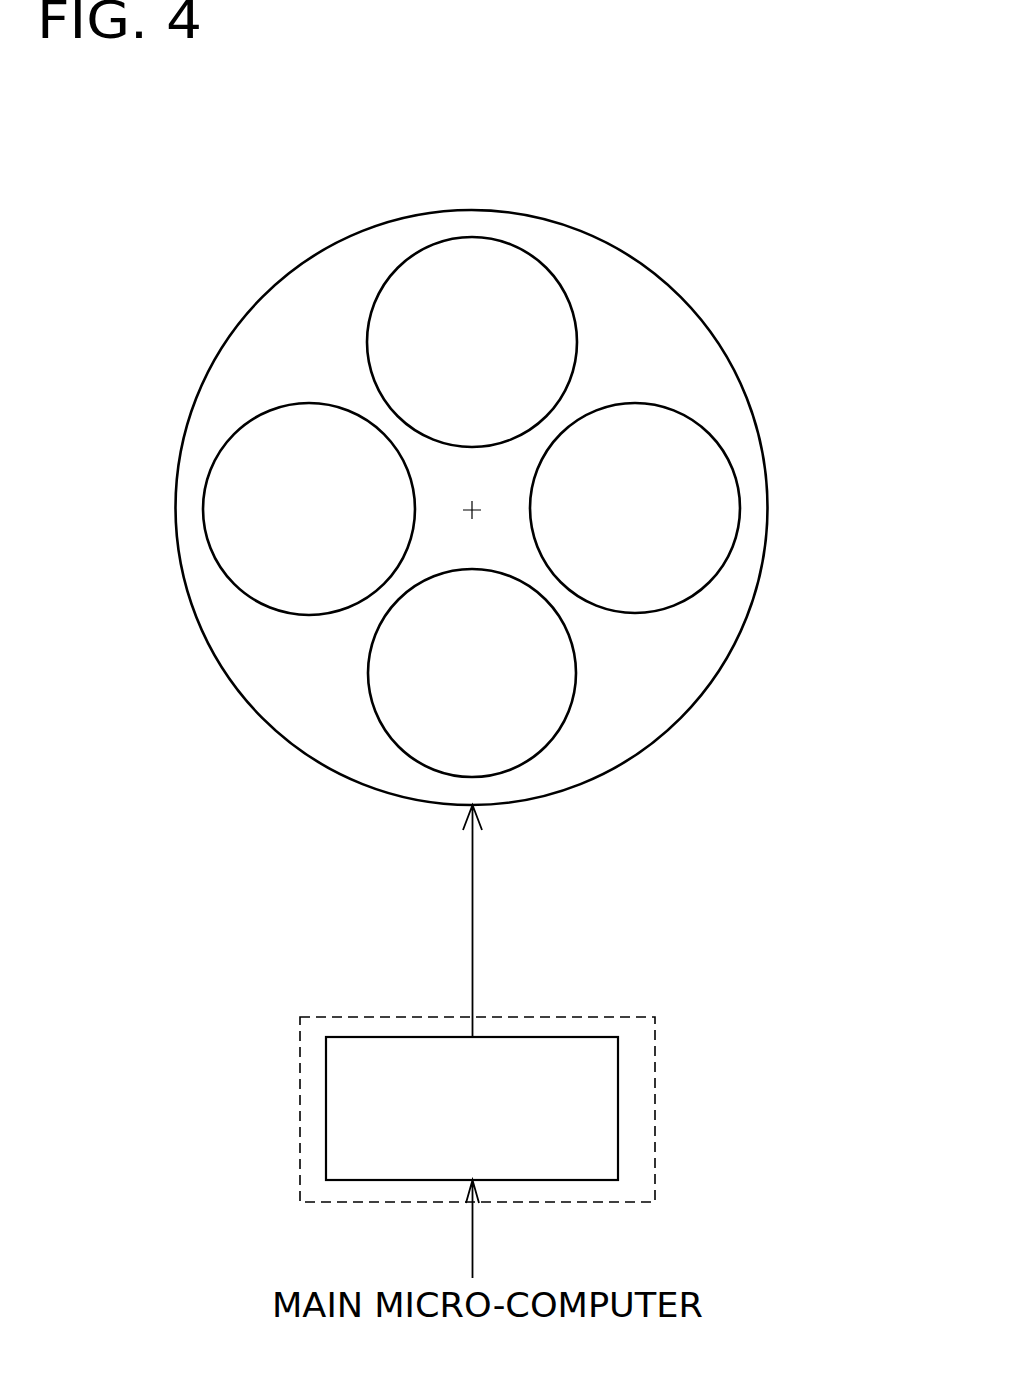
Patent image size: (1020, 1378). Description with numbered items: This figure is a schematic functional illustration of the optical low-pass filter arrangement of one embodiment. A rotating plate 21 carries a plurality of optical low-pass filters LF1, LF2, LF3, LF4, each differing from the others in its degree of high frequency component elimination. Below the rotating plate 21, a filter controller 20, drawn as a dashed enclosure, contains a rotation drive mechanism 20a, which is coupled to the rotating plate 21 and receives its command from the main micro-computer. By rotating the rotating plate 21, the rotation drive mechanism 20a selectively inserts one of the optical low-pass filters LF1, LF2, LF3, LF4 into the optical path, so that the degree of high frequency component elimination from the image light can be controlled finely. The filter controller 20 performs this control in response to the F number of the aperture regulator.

The rotating plate 21 is at (560, 793).
The optical low-pass filter LF1 is at (497, 238).
The optical low-pass filter LF2 is at (740, 505).
The optical low-pass filter LF3 is at (577, 690).
The optical low-pass filter LF4 is at (206, 531).
The filter controller 20 is at (558, 1017).
The rotation drive mechanism 20a is at (618, 1127).